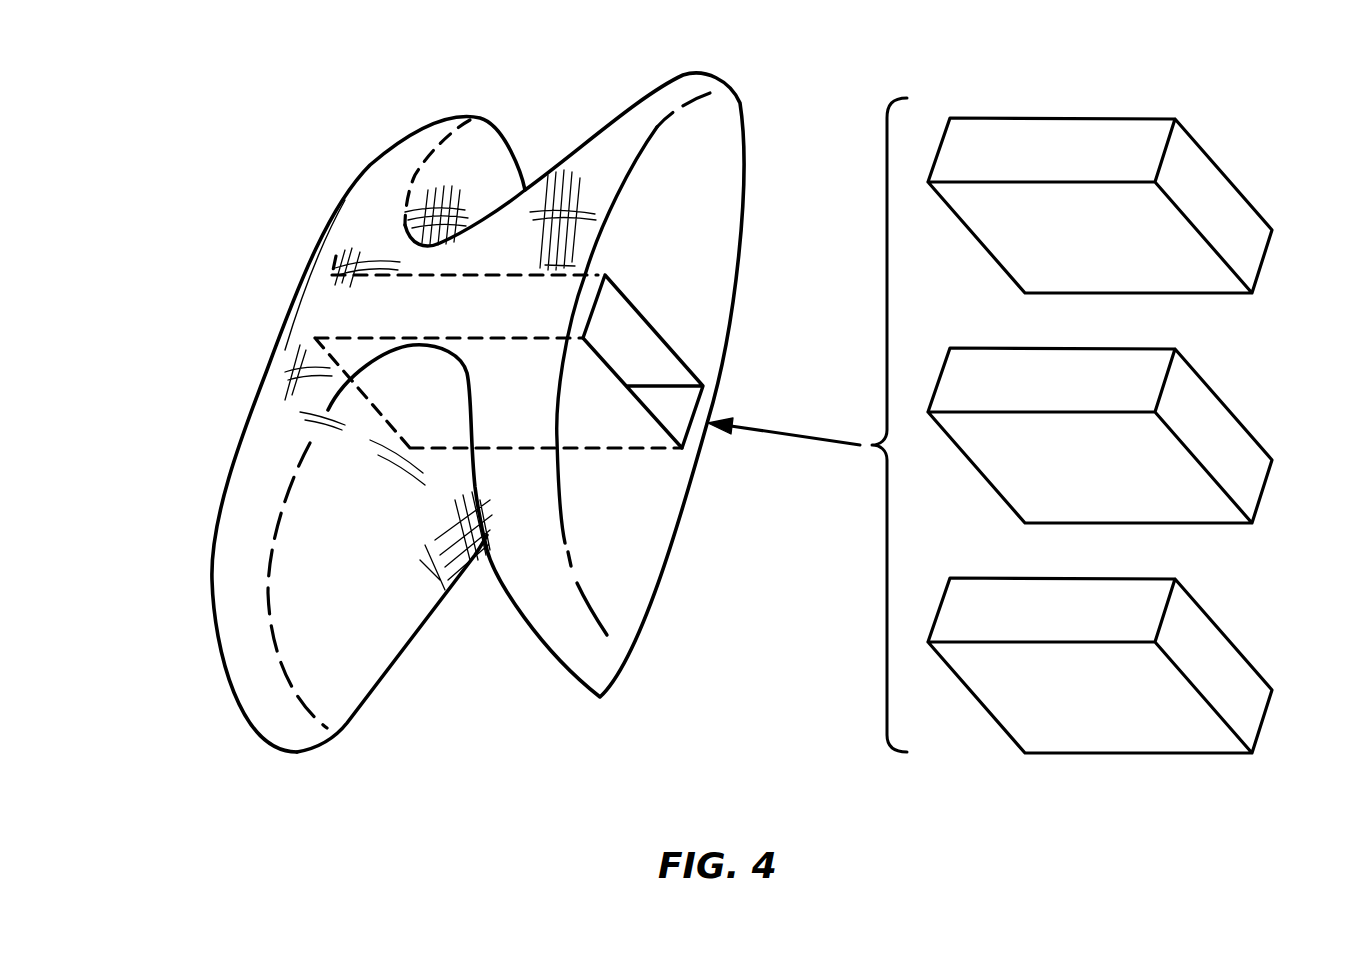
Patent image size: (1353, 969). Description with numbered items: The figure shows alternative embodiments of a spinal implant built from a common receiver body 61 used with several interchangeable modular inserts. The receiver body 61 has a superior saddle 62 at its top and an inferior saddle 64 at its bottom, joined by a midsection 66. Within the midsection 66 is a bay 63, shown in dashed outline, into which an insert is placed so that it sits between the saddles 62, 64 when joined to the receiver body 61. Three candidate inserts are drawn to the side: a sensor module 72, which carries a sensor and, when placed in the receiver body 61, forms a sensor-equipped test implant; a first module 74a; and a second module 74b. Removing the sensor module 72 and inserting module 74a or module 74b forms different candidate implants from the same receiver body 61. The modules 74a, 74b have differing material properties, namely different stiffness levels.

The receiver body 61 is at (297, 290).
The superior saddle 62 is at (553, 118).
The bay 63 is at (315, 338).
The inferior saddle 64 is at (457, 695).
The midsection 66 is at (305, 366).
The sensor module 72 is at (1212, 207).
The module 74a is at (1213, 433).
The module 74b is at (1213, 670).